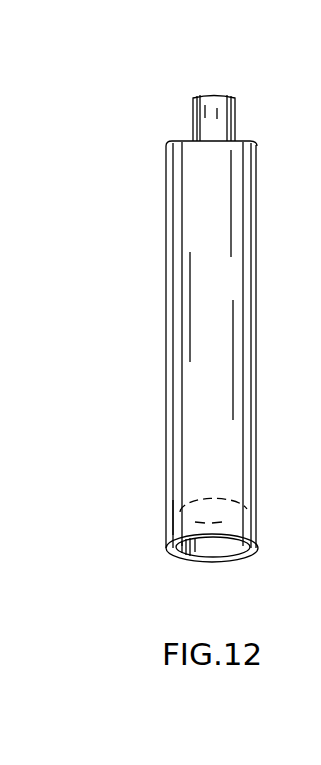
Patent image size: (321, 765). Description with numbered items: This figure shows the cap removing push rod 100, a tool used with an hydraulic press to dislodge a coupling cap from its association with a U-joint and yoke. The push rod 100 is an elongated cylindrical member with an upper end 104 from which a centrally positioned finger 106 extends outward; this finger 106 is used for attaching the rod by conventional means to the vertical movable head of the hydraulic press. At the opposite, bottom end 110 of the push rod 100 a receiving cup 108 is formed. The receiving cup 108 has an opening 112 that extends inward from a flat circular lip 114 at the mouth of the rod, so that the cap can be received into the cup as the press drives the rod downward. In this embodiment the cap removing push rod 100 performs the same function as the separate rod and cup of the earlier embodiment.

The cap removing push rod 100 is at (186, 327).
The upper end 104 is at (172, 170).
The finger 106 is at (205, 118).
The receiving cup 108 is at (168, 531).
The bottom end 110 is at (172, 512).
The opening 112 is at (232, 553).
The flat circular lip 114 is at (178, 560).